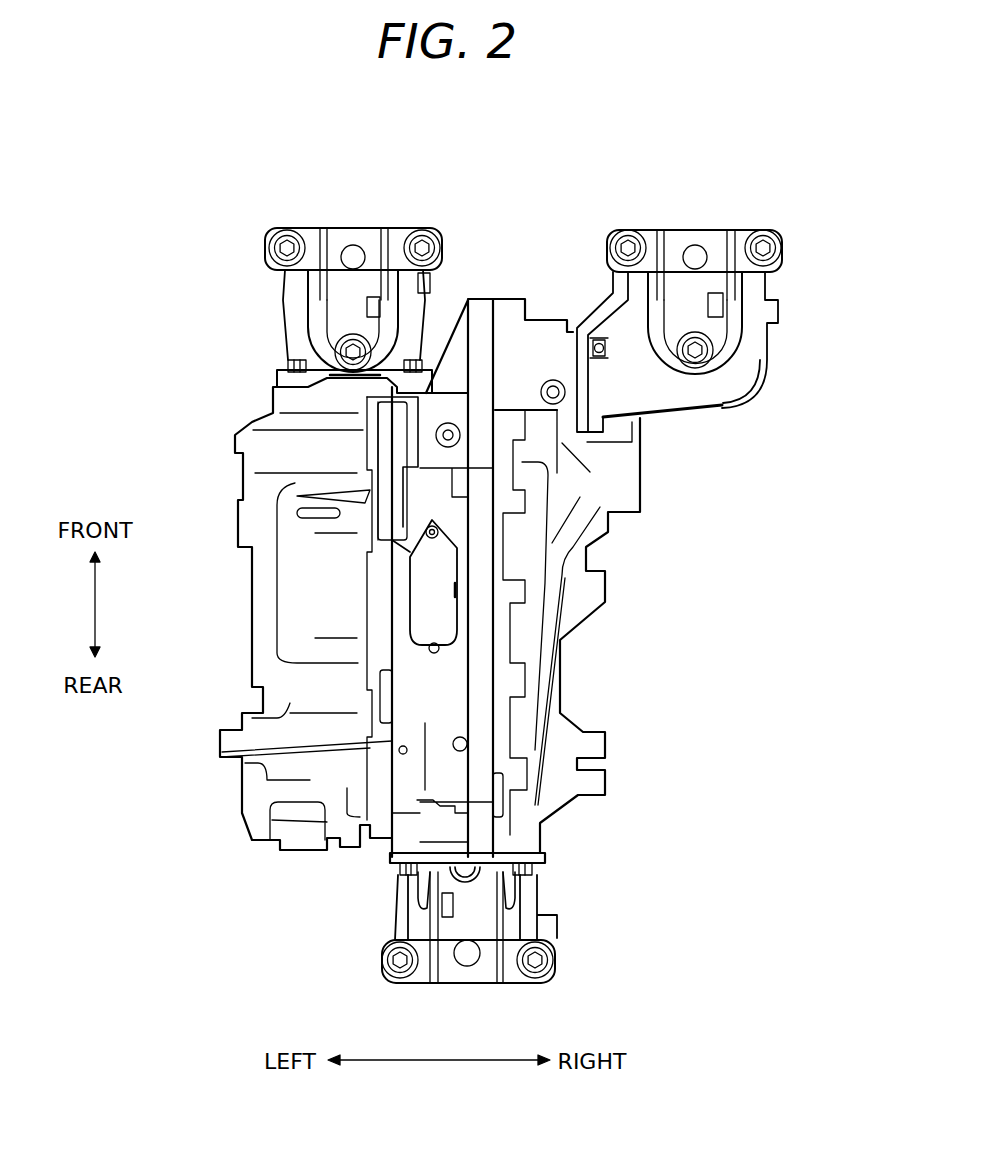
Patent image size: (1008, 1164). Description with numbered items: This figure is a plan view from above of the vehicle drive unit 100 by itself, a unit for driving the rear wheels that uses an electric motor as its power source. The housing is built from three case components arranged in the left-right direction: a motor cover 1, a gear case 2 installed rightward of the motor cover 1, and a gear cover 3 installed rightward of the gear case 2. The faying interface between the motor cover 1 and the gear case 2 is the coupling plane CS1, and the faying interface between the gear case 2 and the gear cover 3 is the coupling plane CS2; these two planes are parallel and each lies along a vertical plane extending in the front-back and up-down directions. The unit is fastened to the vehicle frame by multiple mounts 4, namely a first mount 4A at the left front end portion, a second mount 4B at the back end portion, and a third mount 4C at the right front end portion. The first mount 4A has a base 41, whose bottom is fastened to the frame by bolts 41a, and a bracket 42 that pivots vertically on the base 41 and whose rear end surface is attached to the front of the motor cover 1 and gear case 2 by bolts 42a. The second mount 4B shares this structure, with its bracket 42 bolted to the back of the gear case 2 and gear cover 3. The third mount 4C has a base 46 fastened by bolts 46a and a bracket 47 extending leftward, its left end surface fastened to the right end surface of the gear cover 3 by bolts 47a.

The vehicle drive unit 100 is at (180, 258).
The motor cover 1 is at (307, 842).
The gear case 2 is at (412, 665).
The gear cover 3 is at (562, 668).
The mounts 4 is at (531, 605).
The first mount 4A is at (331, 228).
The second mount 4B is at (437, 980).
The third mount 4C is at (768, 366).
The base 41 is at (365, 240).
The bolts 41a is at (283, 250).
The bracket 42 is at (284, 327).
The bolts 42a is at (297, 357).
The base 46 is at (712, 250).
The bolts 46a is at (765, 248).
The bracket 47 is at (775, 338).
The bolts 47a is at (608, 350).
The coupling plane CS1 is at (392, 485).
The coupling plane CS2 is at (497, 498).